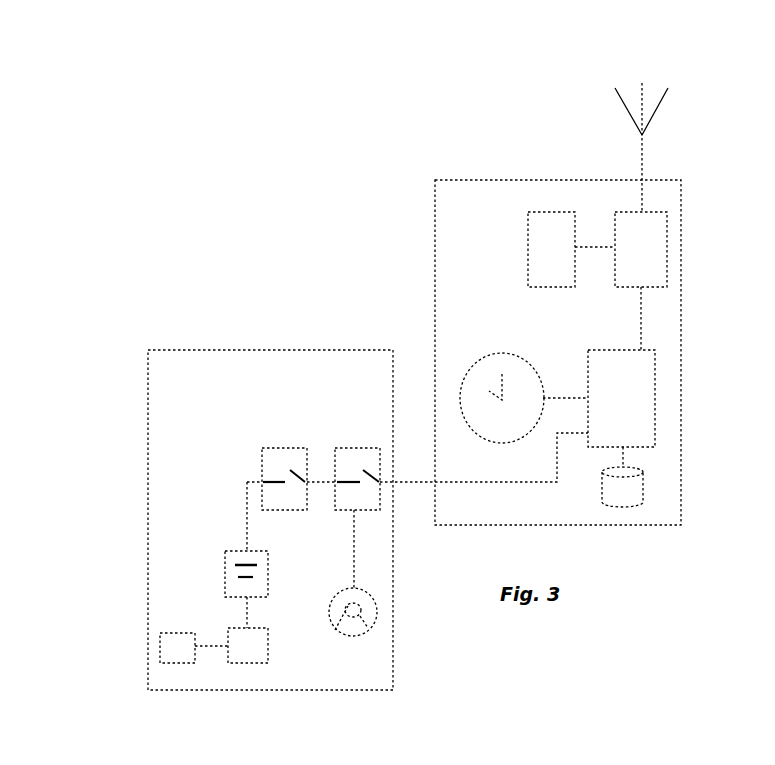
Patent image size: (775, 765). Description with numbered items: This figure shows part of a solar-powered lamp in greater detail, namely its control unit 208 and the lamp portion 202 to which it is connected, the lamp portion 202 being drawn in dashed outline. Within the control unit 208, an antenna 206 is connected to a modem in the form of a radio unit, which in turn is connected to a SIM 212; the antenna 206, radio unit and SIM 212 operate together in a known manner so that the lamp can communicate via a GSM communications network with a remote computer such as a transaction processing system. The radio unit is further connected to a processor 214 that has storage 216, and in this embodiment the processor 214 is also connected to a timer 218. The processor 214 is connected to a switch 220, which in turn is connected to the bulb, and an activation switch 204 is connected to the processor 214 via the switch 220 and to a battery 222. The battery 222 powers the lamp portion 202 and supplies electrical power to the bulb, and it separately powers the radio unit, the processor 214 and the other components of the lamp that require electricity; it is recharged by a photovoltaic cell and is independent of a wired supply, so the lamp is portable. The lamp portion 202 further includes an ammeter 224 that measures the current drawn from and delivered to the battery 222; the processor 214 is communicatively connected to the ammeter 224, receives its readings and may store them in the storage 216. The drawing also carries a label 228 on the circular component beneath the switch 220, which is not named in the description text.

The lamp portion 202 is at (300, 350).
The activation switch 204 is at (272, 447).
The antenna 206 is at (642, 152).
The control unit 208 is at (452, 178).
The SIM 212 is at (540, 210).
The processor 214 is at (655, 397).
The storage 216 is at (643, 487).
The timer 218 is at (500, 353).
The switch 220 is at (350, 447).
The battery 222 is at (273, 575).
The ammeter 224 is at (175, 625).
The indicator 228 is at (337, 633).